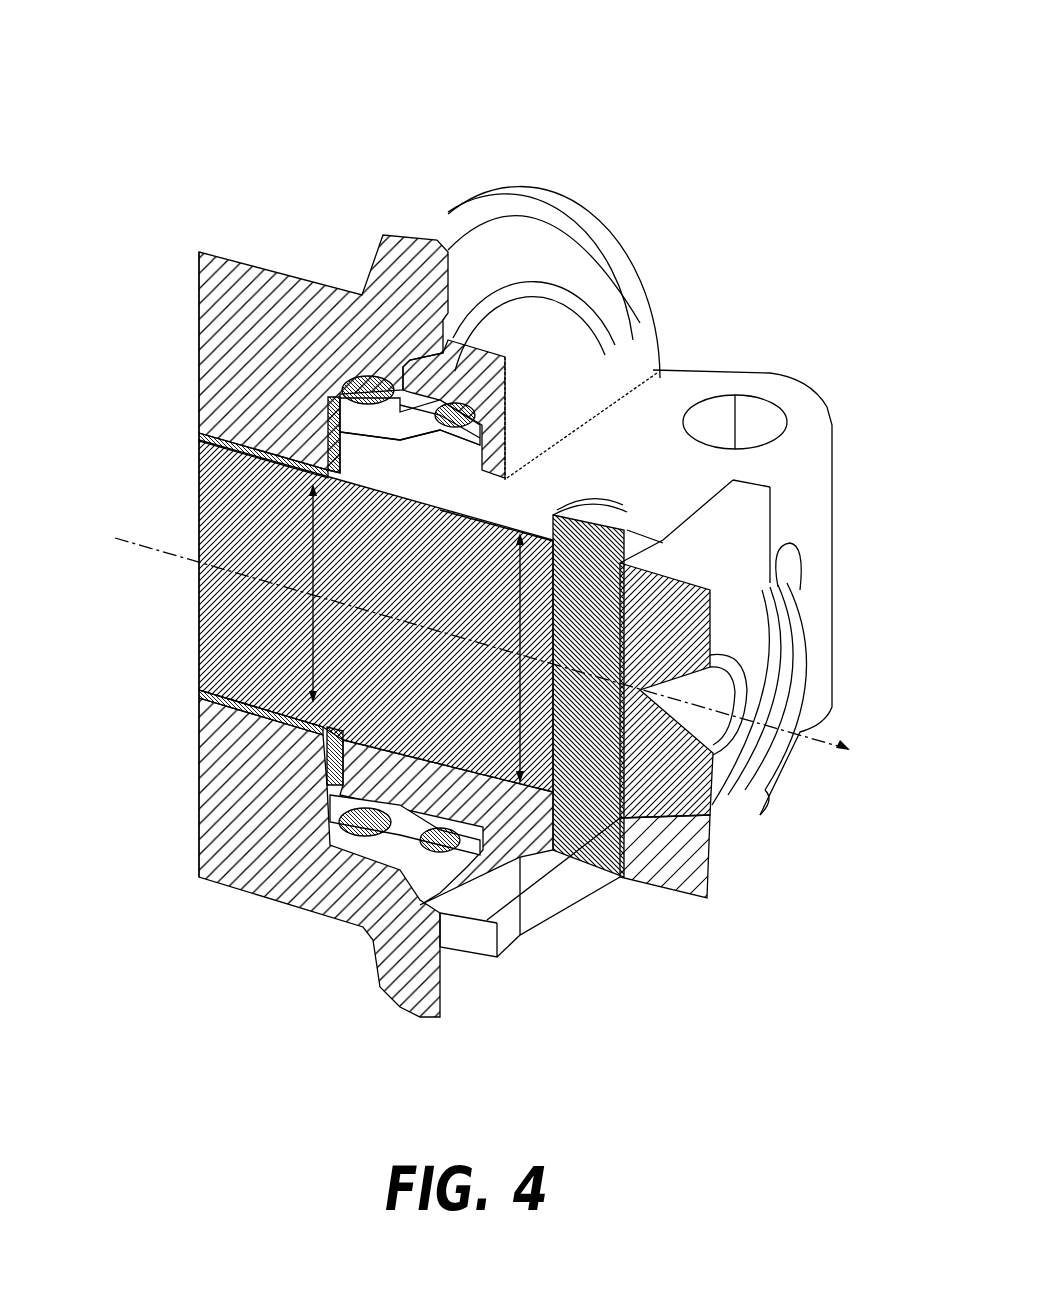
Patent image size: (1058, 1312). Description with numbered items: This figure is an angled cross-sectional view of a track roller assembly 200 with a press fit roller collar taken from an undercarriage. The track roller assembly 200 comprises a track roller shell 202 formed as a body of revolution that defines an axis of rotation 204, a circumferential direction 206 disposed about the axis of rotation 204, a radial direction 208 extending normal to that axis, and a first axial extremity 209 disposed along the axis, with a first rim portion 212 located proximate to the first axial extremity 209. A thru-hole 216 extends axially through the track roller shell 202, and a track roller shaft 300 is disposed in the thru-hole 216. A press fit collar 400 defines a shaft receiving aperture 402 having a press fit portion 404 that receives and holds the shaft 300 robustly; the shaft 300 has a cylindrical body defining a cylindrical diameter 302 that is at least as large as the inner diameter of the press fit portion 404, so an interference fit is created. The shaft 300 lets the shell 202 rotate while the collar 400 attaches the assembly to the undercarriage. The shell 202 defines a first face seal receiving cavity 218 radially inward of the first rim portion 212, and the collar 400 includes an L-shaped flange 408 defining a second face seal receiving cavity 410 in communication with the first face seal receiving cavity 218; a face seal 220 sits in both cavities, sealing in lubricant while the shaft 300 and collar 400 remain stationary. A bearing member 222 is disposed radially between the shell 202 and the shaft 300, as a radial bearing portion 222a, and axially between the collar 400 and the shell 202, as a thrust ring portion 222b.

The track roller assembly 200 is at (752, 108).
The track roller shell 202 is at (318, 246).
The axis of rotation 204 is at (118, 540).
The circumferential direction 206 is at (764, 638).
The radial direction 208 is at (313, 660).
The first axial extremity 209 is at (500, 248).
The first rim portion 212 is at (475, 183).
The thru-hole 216 is at (185, 693).
The first face seal receiving cavity 218 is at (348, 382).
The face seal 220 is at (427, 427).
The bearing member 222 is at (245, 727).
The radial bearing portion 222a is at (199, 440).
The thrust ring portion 222b is at (337, 443).
The track roller shaft 300 is at (722, 785).
The cylindrical diameter 302 is at (520, 627).
The press fit collar 400 is at (833, 412).
The shaft receiving aperture 402 is at (553, 520).
The press fit portion 404 is at (478, 512).
The L-shaped flange 408 is at (548, 332).
The second face seal receiving cavity 410 is at (480, 447).